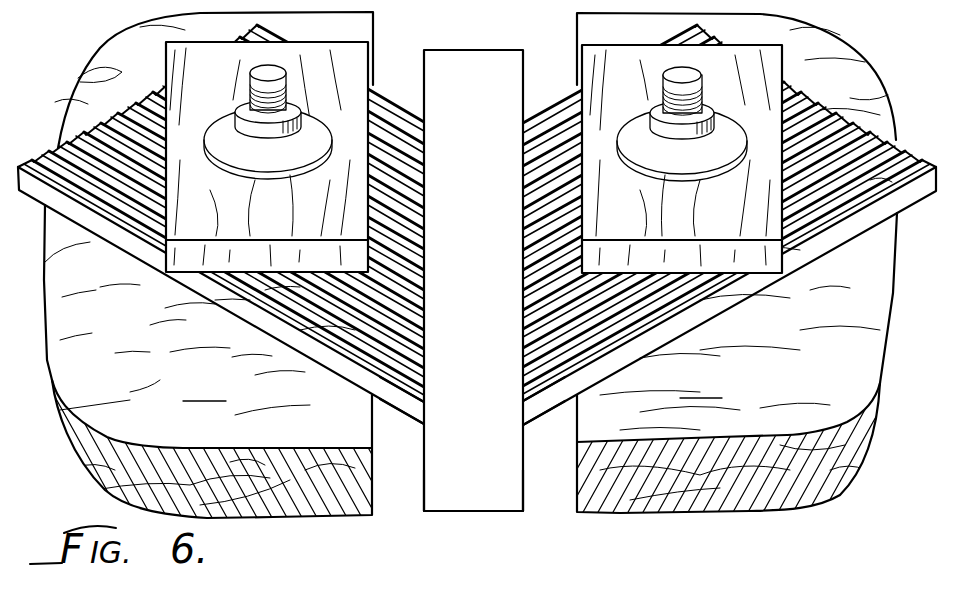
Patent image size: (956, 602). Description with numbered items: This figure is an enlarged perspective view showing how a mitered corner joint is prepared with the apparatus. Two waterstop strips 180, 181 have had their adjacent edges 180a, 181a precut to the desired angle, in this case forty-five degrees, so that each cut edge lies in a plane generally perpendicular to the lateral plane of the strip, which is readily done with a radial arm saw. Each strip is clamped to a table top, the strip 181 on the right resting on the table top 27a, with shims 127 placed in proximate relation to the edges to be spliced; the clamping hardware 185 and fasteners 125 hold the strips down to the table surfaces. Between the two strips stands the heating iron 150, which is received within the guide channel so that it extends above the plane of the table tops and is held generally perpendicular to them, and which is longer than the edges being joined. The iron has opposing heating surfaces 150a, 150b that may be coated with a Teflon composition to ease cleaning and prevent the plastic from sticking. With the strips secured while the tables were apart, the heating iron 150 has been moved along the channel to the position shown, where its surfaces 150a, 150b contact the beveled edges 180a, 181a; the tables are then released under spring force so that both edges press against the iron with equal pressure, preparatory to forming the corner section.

The heating iron 150 is at (483, 47).
The heating surface 150a is at (418, 508).
The heating surface 150b is at (528, 506).
The waterstop strip 180 is at (140, 258).
The adjacent edge 180a is at (424, 379).
The waterstop strip 181 is at (730, 312).
The adjacent edge 181a is at (520, 367).
The clamp block 185 is at (344, 47).
The threaded bolt 125 is at (251, 81).
The shim 127 is at (222, 93).
The table top 27a is at (463, 272).